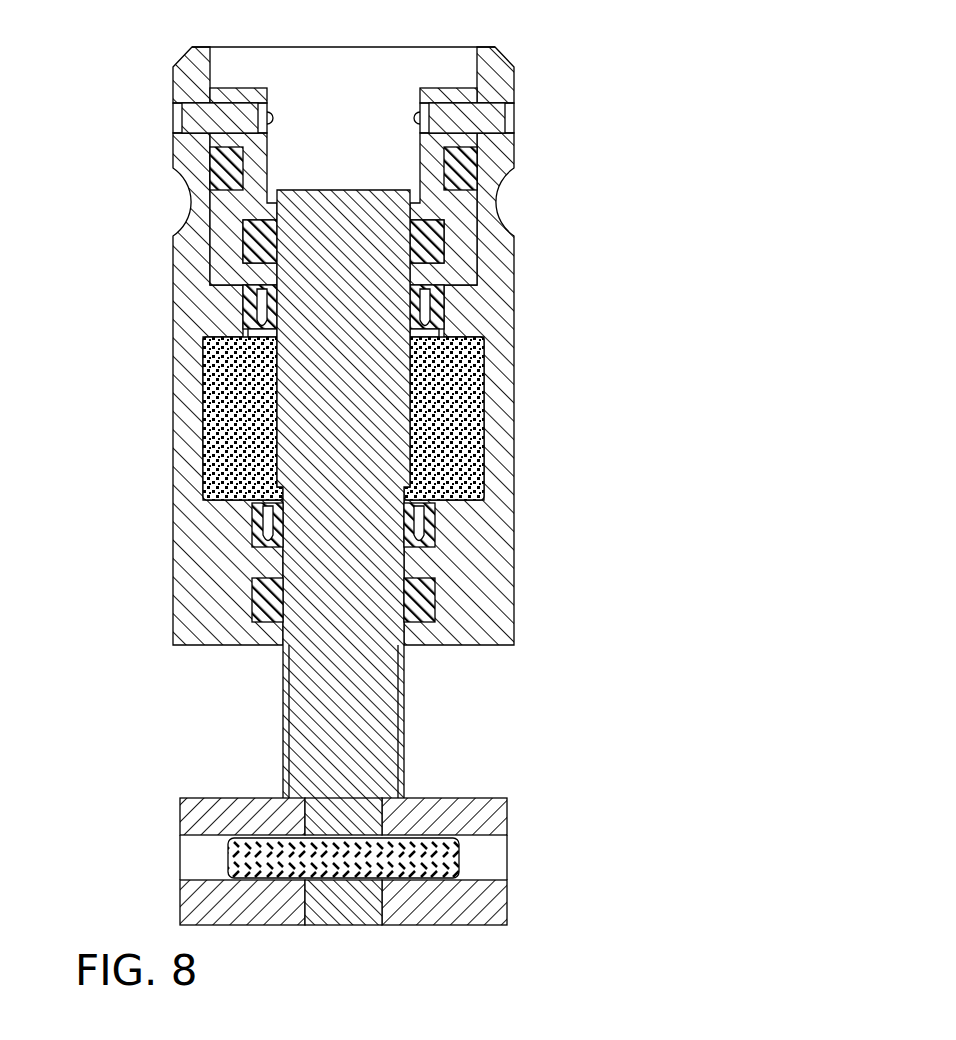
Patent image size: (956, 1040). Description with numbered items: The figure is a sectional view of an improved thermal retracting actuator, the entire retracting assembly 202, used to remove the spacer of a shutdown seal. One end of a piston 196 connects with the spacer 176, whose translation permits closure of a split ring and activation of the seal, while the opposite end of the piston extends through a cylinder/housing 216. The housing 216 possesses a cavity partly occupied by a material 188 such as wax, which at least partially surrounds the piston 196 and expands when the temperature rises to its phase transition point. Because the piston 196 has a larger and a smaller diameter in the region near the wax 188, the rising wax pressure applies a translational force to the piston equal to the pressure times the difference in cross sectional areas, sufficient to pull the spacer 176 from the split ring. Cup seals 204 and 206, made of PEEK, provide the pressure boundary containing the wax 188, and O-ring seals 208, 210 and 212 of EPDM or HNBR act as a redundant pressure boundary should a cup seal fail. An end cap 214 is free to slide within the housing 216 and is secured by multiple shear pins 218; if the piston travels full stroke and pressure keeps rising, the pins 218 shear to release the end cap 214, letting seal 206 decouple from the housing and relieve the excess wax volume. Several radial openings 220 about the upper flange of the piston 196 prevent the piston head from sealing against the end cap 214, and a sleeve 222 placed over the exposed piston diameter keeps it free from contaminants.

The spacer 176 is at (507, 830).
The material (wax) 188 is at (220, 445).
The piston 196 is at (310, 742).
The retracting assembly 202 is at (538, 447).
The cup seal 204 is at (433, 538).
The cup seal 206 is at (243, 320).
The O-ring seal 208 is at (433, 606).
The O-ring seal 210 is at (225, 233).
The O-ring seal 212 is at (497, 179).
The end cap 214 is at (470, 265).
The cylinder/housing 216 is at (197, 588).
The shear pins 218 is at (178, 119).
The radial openings 220 is at (410, 188).
The sleeve 222 is at (403, 768).